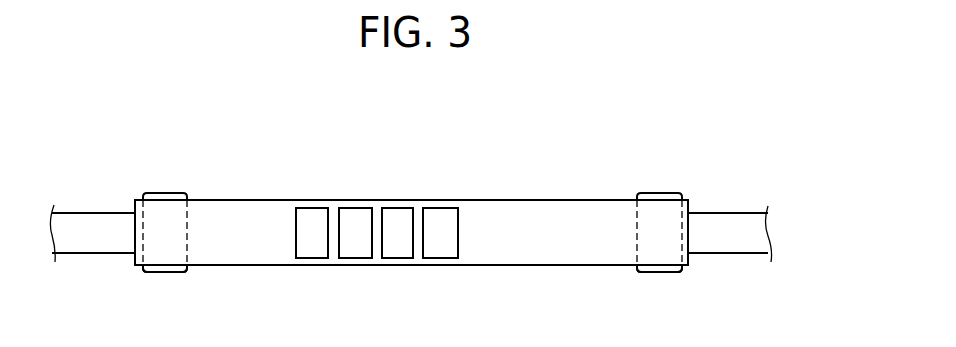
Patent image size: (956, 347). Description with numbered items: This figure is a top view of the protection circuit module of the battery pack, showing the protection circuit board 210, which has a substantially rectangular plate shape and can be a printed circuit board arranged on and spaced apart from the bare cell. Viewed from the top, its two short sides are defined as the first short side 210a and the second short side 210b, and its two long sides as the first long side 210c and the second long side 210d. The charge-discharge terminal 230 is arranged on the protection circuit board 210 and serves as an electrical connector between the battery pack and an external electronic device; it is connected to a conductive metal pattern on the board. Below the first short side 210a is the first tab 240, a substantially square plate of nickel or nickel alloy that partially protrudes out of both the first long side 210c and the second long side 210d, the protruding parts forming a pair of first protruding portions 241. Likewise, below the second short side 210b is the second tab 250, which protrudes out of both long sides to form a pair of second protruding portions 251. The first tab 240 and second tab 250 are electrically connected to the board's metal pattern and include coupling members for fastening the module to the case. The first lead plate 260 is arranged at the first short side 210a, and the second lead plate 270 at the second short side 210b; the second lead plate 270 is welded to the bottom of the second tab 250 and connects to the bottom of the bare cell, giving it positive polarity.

The protection circuit board 210 is at (563, 207).
The first short side 210a is at (692, 202).
The second short side 210b is at (133, 200).
The first long side 210c is at (468, 268).
The second long side 210d is at (468, 198).
The charge-discharge terminal 230 is at (313, 218).
The first tab 240 is at (645, 252).
The first protruding portion 241 is at (672, 274).
The second tab 250 is at (150, 256).
The second protruding portion 251 is at (178, 276).
The first lead plate 260 is at (737, 217).
The second lead plate 270 is at (94, 211).